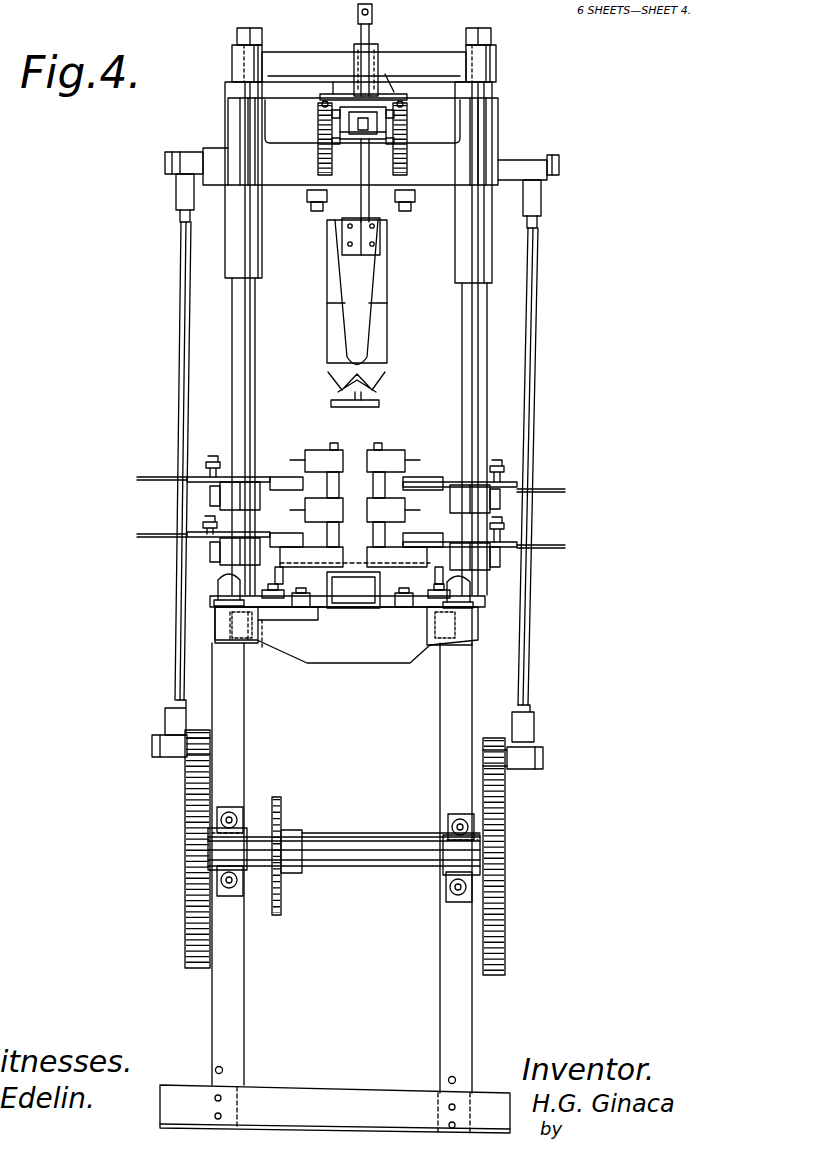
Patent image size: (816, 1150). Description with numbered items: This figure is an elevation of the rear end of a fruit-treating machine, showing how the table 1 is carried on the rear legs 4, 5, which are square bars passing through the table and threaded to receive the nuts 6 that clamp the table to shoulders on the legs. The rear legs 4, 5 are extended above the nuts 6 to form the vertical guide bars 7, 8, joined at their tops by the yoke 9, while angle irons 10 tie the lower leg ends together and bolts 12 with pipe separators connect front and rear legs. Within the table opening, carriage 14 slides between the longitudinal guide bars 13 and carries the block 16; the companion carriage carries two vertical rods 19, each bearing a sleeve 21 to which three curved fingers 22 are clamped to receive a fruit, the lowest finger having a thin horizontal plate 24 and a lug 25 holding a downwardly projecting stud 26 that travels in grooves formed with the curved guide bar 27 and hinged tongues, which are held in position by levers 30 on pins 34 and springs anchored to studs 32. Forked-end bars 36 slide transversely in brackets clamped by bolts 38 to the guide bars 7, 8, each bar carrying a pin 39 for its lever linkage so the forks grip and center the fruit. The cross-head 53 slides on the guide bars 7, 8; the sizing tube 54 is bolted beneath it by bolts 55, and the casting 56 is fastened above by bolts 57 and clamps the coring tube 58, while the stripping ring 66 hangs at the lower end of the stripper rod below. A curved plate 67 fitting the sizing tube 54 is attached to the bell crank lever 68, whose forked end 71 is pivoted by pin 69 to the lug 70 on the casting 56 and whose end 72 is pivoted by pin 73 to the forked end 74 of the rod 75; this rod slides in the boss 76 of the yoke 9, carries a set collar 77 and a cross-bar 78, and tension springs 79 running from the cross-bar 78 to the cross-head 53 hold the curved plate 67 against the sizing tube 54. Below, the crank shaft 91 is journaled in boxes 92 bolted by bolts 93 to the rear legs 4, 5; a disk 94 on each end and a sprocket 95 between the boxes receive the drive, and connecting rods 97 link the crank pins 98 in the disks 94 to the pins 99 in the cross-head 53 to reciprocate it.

The table 1 is at (347, 630).
The rear leg 4 is at (236, 1013).
The rear leg 5 is at (466, 1026).
The nuts 6 is at (216, 586).
The vertical guide bar 7 is at (256, 352).
The vertical guide bar 8 is at (480, 350).
The yoke 9 is at (434, 58).
The angle irons 10 is at (332, 1090).
The bolts 12 is at (222, 1069).
The guide bars 13 is at (305, 604).
The carriage 14 is at (300, 612).
The block 16 is at (353, 590).
The vertical rods 19 is at (333, 443).
The sleeve 21 is at (372, 484).
The curved fingers 22 is at (312, 453).
The thin horizontal plate 24 is at (375, 565).
The lug 25 is at (508, 556).
The stud 26 is at (444, 572).
The curved guide bar 27 is at (492, 582).
The lever 30 is at (264, 648).
The stud 32 is at (237, 645).
The pins 34 is at (262, 624).
The forked-end bars 36 is at (430, 482).
The bolts 38 is at (210, 496).
The pin 39 is at (212, 456).
The cross-head 53 is at (430, 170).
The sizing tube 54 is at (388, 290).
The bolts 55 is at (312, 211).
The casting 56 is at (388, 130).
The bolts 57 is at (396, 114).
The coring tube 58 is at (368, 386).
The stripping ring 66 is at (380, 404).
The curved plate 67 is at (366, 330).
The bell crank lever 68 is at (340, 222).
The pin 69 is at (396, 92).
The lug 70 is at (378, 110).
The forked end 71 is at (348, 124).
The end 72 is at (360, 150).
The pin 73 is at (336, 142).
The forked end 74 is at (320, 104).
The rod 75 is at (372, 34).
The boss 76 is at (354, 52).
The set collar 77 is at (372, 12).
The cross-bar 78 is at (335, 92).
The tension springs 79 is at (316, 118).
The crank shaft 91 is at (366, 866).
The boxes 92 is at (230, 812).
The bolts 93 is at (232, 890).
The disk 94 is at (184, 928).
The sprocket 95 is at (282, 806).
The connecting rods 97 is at (176, 378).
The crank pins 98 is at (152, 748).
The pins 99 is at (160, 162).